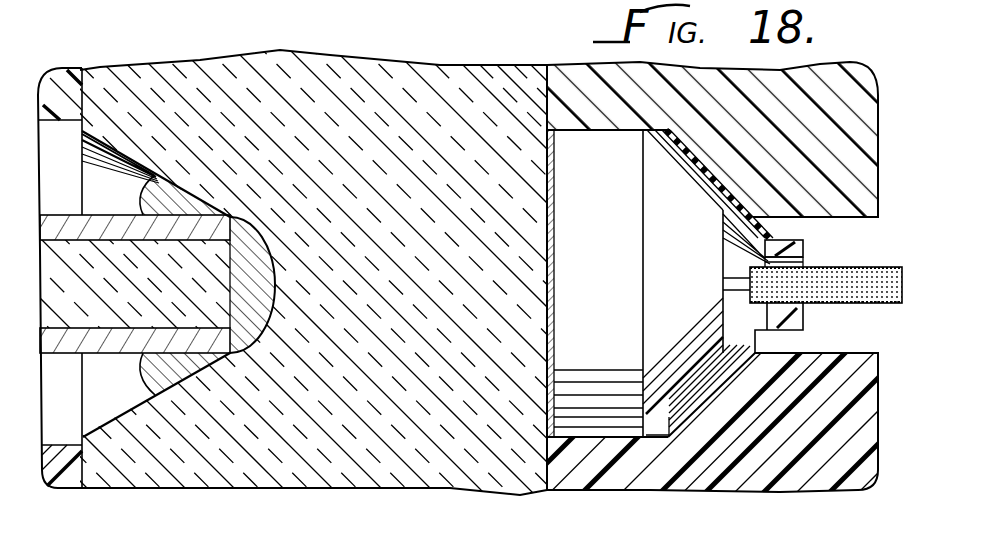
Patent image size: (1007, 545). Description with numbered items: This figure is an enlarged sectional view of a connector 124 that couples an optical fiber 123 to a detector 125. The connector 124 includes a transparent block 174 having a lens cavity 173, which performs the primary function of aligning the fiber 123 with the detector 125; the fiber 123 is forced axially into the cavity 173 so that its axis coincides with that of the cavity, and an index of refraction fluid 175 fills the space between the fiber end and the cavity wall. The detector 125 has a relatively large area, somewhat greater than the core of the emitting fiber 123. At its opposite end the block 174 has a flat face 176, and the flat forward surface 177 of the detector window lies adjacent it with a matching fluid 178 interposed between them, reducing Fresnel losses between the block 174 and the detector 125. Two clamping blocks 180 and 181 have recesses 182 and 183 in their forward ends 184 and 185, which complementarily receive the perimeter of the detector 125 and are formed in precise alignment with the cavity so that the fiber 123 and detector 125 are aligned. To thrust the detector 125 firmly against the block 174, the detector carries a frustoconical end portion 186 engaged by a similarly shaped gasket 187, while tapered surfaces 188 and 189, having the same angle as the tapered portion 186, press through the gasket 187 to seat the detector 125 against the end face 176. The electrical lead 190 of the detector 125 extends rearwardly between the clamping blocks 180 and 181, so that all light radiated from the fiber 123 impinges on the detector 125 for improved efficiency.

The connector 124 is at (343, 31).
The transparent block 174 is at (437, 60).
The lens cavity 173 is at (254, 222).
The index of refraction fluid 175 is at (264, 302).
The fiber 123 is at (128, 300).
The clamping block 180 is at (835, 70).
The clamping block 181 is at (806, 490).
The forward end 184 is at (547, 97).
The forward end 185 is at (543, 466).
The recess 182 is at (582, 128).
The flat face 176 is at (552, 172).
The flat forward surface 177 is at (556, 200).
The matching fluid 178 is at (550, 248).
The detector 125 is at (616, 294).
The recess 183 is at (598, 434).
The tapered surface 188 is at (685, 152).
The gasket 187 is at (710, 175).
The frustoconical end portion 186 is at (728, 190).
The tapered surface 189 is at (707, 380).
The electrical lead 190 is at (865, 262).